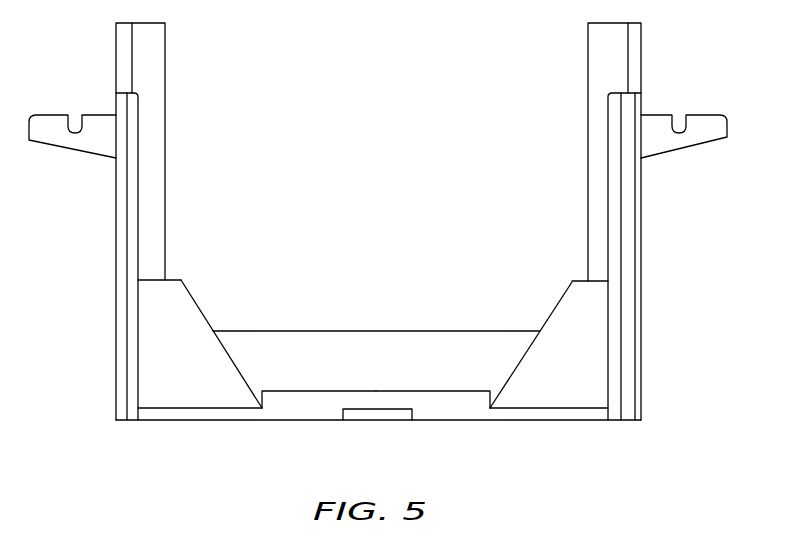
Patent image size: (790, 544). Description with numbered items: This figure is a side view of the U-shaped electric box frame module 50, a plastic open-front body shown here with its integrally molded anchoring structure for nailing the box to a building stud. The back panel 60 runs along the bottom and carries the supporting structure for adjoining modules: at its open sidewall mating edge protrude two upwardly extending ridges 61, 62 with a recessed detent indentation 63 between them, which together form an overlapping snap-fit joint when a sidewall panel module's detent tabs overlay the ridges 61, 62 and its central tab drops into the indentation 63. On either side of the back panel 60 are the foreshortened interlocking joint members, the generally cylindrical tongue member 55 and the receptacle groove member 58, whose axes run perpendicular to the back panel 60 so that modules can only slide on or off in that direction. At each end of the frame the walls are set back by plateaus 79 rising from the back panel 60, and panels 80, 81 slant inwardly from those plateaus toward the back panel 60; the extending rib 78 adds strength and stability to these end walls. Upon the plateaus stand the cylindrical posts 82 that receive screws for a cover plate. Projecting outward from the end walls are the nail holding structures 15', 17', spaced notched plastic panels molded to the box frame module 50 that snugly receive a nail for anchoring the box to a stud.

The box frame module 50 is at (399, 124).
The tongue member 55 is at (128, 252).
The receptacle groove member 58 is at (628, 297).
The back panel 60 is at (210, 421).
The ridge 61 is at (297, 390).
The ridge 62 is at (450, 397).
The detent indentation 63 is at (385, 417).
The rib 78 is at (408, 332).
The plateau 79 is at (582, 280).
The slanted panel 80 is at (573, 303).
The slanted panel 81 is at (177, 310).
The cylindrical post 82 is at (150, 55).
The nail holding structure 15' is at (72, 165).
The nail holding structure 17' is at (684, 146).